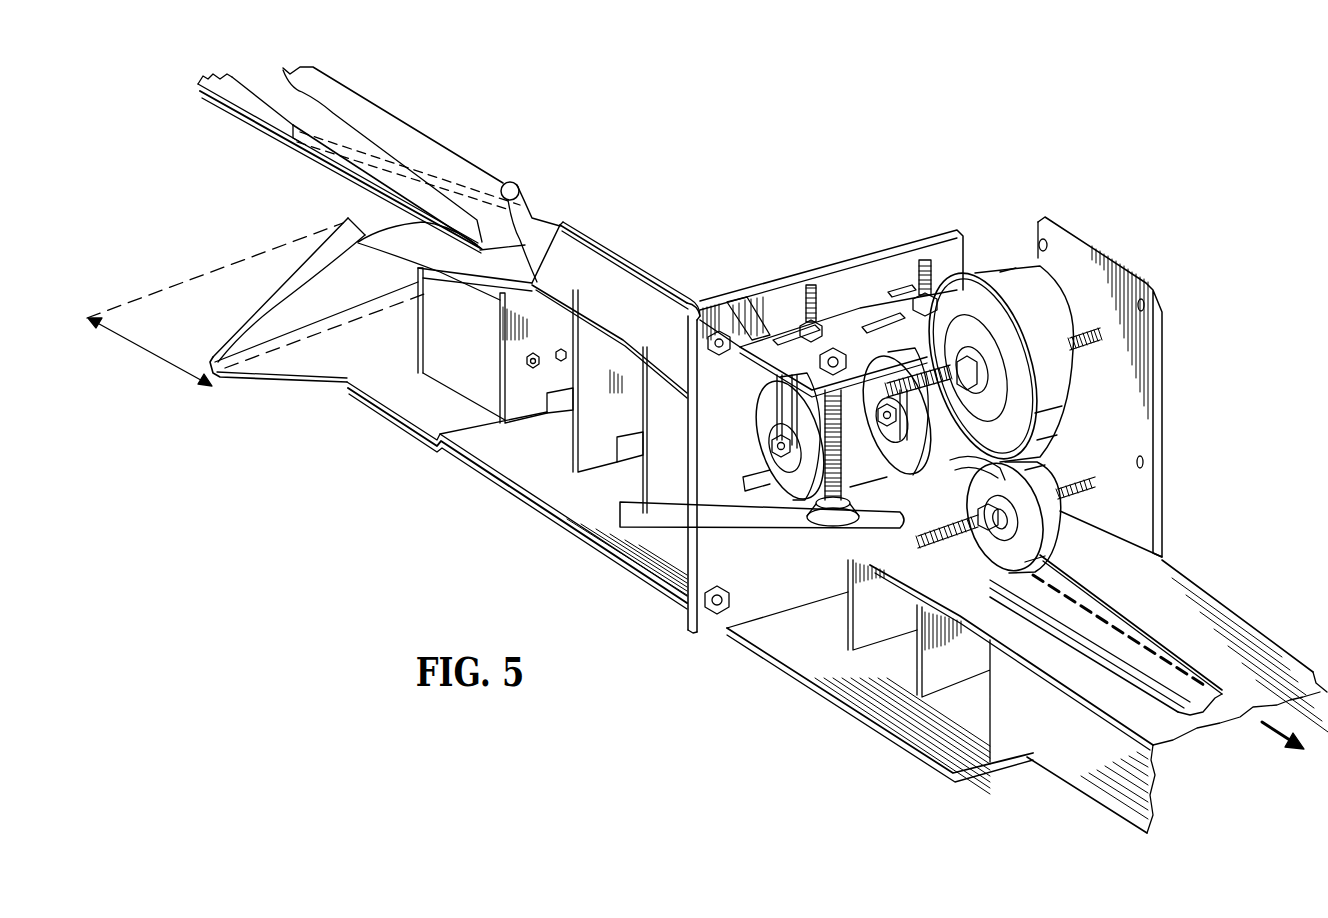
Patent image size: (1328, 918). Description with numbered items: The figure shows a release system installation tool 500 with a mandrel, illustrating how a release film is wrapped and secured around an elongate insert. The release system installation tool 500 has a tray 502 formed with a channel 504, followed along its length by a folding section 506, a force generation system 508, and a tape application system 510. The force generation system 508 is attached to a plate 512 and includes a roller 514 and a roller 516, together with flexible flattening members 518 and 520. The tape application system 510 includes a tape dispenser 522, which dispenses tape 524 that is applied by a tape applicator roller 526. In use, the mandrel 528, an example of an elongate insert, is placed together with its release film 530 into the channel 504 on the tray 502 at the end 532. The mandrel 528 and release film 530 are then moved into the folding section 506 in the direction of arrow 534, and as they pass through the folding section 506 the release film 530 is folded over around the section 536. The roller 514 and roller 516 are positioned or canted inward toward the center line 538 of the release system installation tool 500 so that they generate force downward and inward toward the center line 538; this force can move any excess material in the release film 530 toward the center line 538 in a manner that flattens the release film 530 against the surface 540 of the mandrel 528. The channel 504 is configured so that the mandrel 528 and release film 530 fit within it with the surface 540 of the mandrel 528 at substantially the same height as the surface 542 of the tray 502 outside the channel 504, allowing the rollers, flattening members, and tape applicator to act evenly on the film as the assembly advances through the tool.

The release system installation tool 500 is at (860, 132).
The tray 502 is at (495, 282).
The channel 504 is at (572, 250).
The folding section 506 is at (653, 307).
The force generation system 508 is at (760, 300).
The tape application system 510 is at (1086, 224).
The plate 512 is at (713, 634).
The roller 514 is at (770, 425).
The roller 516 is at (900, 463).
The flexible flattening member 518 is at (773, 532).
The flexible flattening member 520 is at (940, 548).
The tape dispenser 522 is at (890, 313).
The tape 524 is at (990, 258).
The tape applicator roller 526 is at (1047, 525).
The mandrel 528 is at (385, 142).
The release film 530 is at (268, 88).
The end 532 is at (512, 182).
The arrow 534 is at (1268, 740).
The section 536 is at (148, 352).
The center line 538 is at (1115, 630).
The surface 540 is at (352, 130).
The surface 542 is at (617, 257).